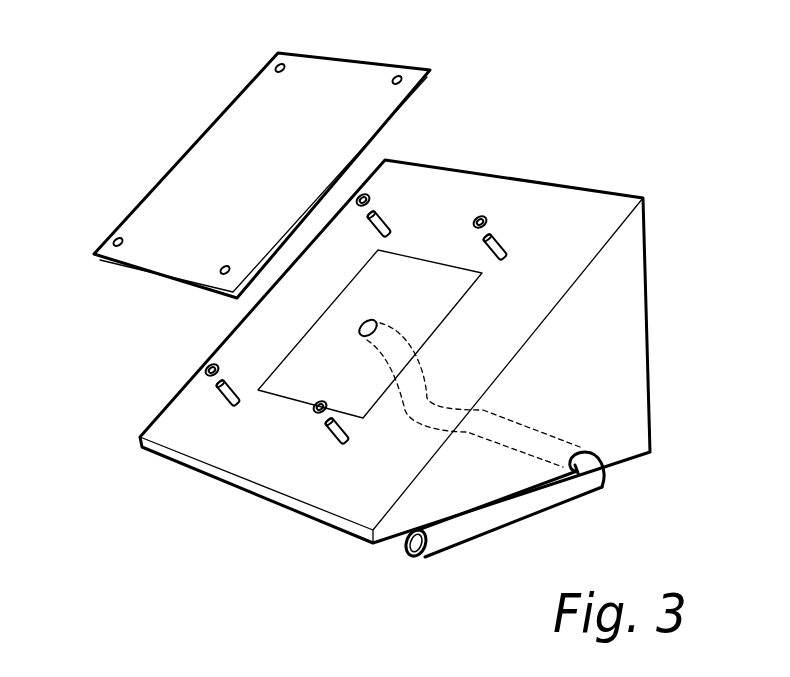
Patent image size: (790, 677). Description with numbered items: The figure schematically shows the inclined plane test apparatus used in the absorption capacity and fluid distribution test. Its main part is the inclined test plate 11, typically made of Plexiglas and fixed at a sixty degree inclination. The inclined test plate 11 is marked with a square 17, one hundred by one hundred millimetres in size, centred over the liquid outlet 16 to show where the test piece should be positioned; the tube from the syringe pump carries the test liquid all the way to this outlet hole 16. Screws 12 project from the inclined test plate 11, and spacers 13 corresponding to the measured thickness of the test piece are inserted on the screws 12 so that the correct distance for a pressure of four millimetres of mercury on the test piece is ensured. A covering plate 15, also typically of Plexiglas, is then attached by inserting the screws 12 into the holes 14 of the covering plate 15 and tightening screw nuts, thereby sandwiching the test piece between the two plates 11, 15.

The inclined test plate 11 is at (585, 215).
The screws 12 is at (390, 222).
The spacers 13 is at (372, 192).
The holes 14 is at (278, 63).
The covering plate 15 is at (243, 170).
The liquid outlet hole 16 is at (360, 327).
The square 17 is at (452, 312).